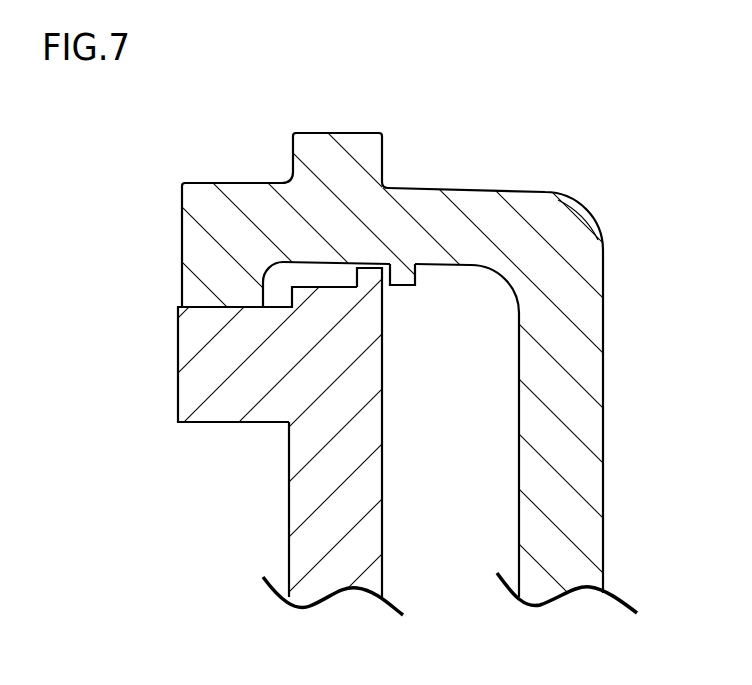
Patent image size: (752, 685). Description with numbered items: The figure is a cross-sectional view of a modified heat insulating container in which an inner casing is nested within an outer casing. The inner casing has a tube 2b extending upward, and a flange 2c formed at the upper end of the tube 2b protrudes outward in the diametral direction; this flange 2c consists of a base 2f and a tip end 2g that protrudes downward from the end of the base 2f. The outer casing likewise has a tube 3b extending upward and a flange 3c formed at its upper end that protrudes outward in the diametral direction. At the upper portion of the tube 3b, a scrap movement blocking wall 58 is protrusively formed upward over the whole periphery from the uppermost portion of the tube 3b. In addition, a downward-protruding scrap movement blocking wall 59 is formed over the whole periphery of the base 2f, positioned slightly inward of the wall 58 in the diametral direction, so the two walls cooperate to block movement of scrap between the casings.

The tube 2b is at (590, 486).
The flange 2c is at (205, 198).
The base 2f is at (485, 205).
The tip end 2g is at (200, 262).
The tube 3b is at (300, 495).
The flange 3c is at (192, 352).
The scrap movement blocking wall 58 is at (372, 260).
The scrap movement blocking wall 59 is at (403, 283).